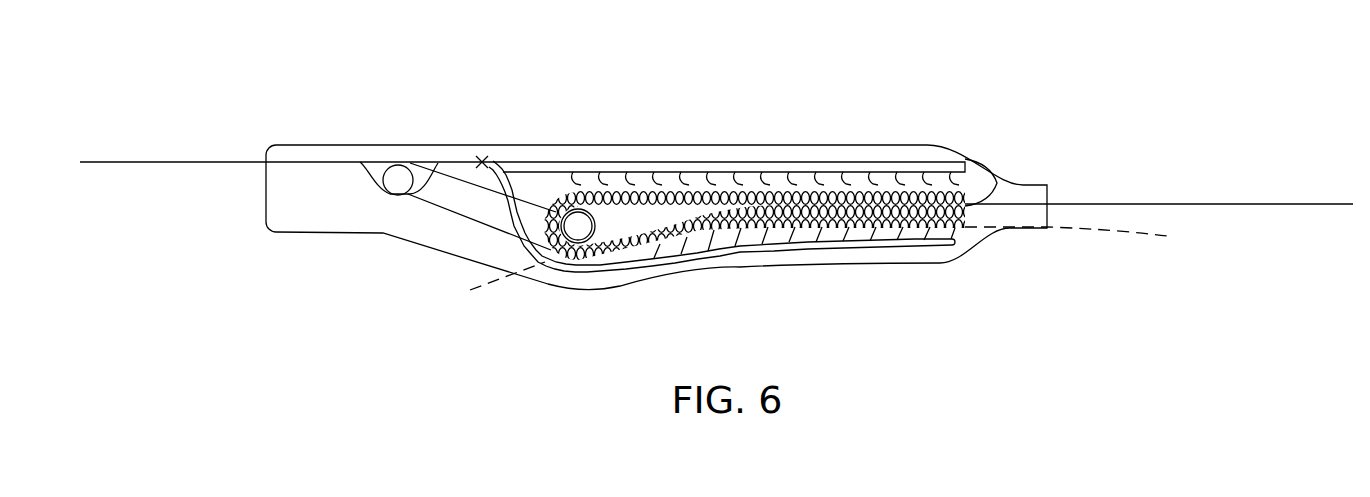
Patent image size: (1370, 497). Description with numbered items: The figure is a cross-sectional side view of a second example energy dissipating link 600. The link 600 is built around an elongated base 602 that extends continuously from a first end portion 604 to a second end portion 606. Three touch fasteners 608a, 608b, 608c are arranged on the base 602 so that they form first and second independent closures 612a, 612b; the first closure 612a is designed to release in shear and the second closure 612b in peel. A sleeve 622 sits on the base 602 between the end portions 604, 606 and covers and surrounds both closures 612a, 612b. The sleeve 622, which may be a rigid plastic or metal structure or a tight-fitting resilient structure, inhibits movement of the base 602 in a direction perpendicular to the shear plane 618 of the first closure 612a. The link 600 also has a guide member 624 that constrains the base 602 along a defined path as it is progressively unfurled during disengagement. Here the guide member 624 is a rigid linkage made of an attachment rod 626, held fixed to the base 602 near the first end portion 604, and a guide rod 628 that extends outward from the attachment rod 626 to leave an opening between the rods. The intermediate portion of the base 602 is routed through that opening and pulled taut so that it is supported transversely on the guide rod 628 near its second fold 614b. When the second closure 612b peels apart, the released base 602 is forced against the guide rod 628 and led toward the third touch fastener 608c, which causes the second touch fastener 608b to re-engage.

The energy dissipating link 600 is at (296, 62).
The elongated base 602 is at (1141, 201).
The first end portion 604 is at (141, 160).
The second end portion 606 is at (1279, 203).
The first touch fastener 608a is at (592, 185).
The second touch fastener 608b is at (890, 234).
The third touch fastener 608c is at (640, 260).
The first closure 612a is at (783, 254).
The second closure 612b is at (777, 167).
The second fold 614b is at (552, 214).
The shear plane 618 is at (1102, 231).
The sleeve 622 is at (468, 258).
The guide member 624 is at (442, 215).
The attachment rod 626 is at (396, 182).
The guide rod 628 is at (587, 192).